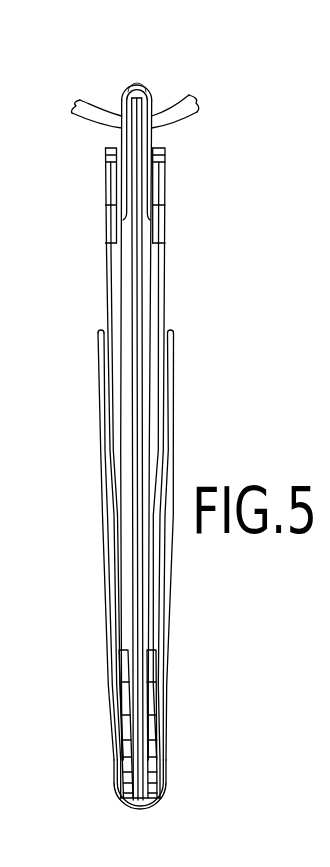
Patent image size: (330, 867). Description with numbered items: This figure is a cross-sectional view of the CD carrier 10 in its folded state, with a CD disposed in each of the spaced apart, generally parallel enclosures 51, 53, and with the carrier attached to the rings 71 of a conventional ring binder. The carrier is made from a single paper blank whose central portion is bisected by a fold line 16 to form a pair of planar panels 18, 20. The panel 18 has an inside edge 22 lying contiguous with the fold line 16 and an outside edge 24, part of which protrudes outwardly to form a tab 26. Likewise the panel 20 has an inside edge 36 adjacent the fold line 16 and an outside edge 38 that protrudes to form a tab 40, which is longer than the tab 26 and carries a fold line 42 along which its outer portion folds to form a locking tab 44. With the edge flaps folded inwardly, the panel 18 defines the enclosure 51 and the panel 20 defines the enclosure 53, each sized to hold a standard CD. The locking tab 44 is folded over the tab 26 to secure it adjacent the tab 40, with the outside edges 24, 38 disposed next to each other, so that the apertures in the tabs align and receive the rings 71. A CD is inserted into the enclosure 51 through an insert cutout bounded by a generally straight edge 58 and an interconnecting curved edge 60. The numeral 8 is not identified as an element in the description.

The guide wire 8 is at (3, 440).
The CD carrier 10 is at (232, 448).
The fold line 16 is at (140, 810).
The planar panel 18 is at (101, 442).
The planar panel 20 is at (172, 423).
The inside edge 22 is at (120, 808).
The outside edge 24 is at (136, 90).
The tab 26 is at (132, 112).
The inside edge 36 is at (158, 810).
The outside edge 38 is at (150, 93).
The tab 40 is at (124, 176).
The fold line 42 is at (139, 85).
The locking tab 44 is at (118, 135).
The enclosure 51 is at (123, 623).
The enclosure 53 is at (152, 623).
The straight edge 58 is at (123, 220).
The curved edge 60 is at (100, 330).
The rings 71 is at (186, 108).